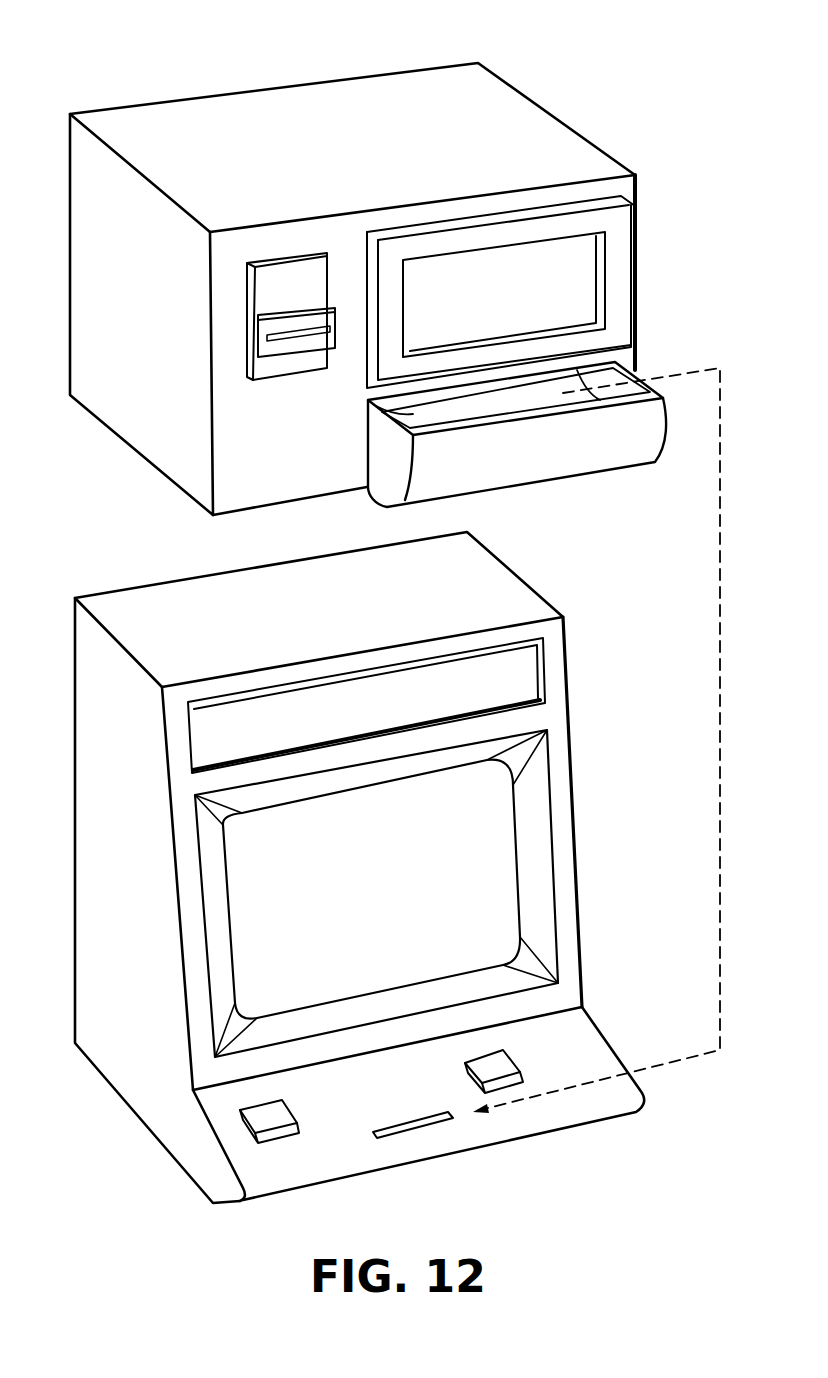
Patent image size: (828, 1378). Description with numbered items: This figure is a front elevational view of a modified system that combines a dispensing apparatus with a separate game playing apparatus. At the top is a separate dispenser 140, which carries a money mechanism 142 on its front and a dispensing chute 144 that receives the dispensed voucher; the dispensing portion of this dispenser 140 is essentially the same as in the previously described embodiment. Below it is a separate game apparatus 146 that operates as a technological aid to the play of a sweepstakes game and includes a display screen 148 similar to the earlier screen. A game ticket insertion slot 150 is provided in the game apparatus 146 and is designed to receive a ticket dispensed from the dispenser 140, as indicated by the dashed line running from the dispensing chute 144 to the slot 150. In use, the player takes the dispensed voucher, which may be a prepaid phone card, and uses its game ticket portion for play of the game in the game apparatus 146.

The dispenser 140 is at (585, 107).
The money mechanism 142 is at (295, 257).
The dispensing chute 144 is at (368, 412).
The game apparatus 146 is at (585, 627).
The display screen 148 is at (268, 932).
The game ticket insertion slot 150 is at (457, 1118).